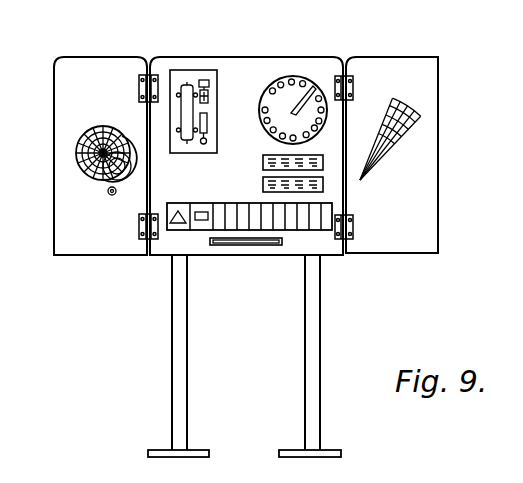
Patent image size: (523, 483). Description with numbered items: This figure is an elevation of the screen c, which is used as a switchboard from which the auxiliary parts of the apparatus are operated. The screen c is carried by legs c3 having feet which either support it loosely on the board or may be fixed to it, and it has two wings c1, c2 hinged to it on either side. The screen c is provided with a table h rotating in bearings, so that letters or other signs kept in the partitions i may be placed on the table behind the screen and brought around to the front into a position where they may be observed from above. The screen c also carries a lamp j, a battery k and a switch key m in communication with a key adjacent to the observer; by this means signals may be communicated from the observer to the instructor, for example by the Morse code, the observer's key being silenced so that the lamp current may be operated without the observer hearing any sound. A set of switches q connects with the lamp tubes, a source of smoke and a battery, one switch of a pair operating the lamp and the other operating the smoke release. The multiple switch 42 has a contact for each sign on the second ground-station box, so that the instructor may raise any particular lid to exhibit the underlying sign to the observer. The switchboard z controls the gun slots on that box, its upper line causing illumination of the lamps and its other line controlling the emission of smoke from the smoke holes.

The wing c1 is at (82, 78).
The screen c is at (252, 80).
The wing c2 is at (382, 75).
The legs c3 is at (358, 333).
The battery k is at (184, 113).
The lamp j is at (201, 80).
The switch key m is at (210, 117).
The multiple switch 42 is at (303, 82).
The switchboard z is at (325, 169).
The set of switches q is at (325, 185).
The partitions i is at (175, 223).
The table h is at (259, 245).